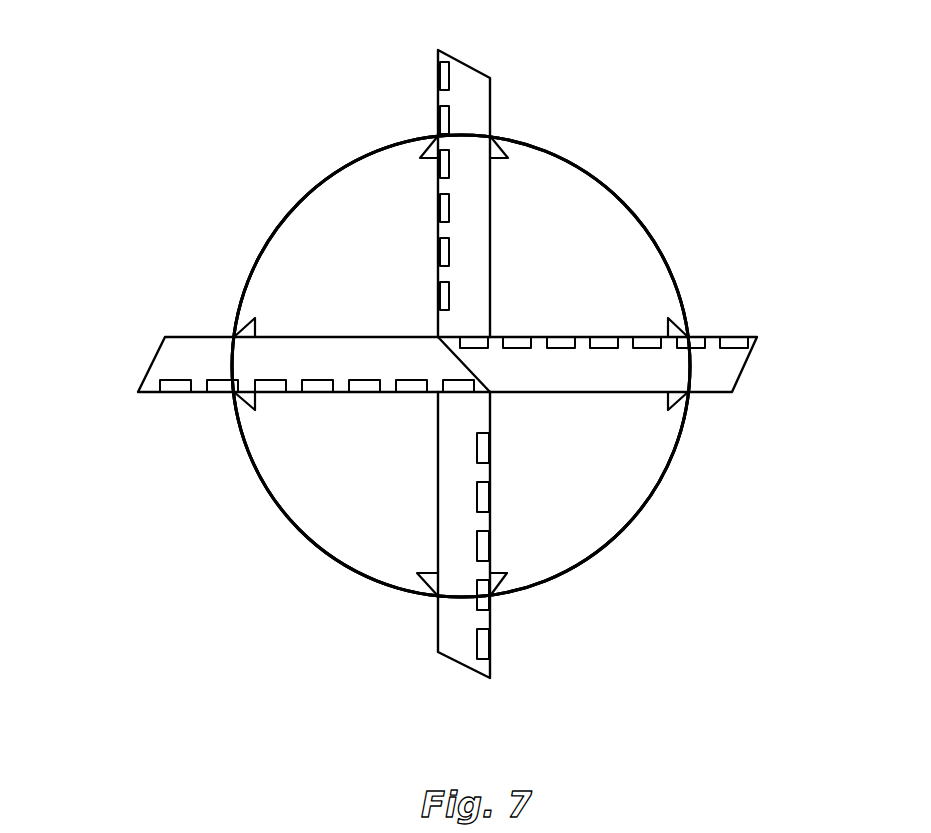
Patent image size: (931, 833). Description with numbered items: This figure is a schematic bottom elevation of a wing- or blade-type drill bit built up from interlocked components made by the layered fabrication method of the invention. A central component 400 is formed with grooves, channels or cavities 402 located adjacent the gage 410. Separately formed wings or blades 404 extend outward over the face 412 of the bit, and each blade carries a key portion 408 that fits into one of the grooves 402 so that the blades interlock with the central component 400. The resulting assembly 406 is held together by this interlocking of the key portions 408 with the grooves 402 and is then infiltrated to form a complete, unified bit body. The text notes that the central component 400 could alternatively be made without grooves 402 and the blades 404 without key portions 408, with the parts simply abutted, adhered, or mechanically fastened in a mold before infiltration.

The central component 400 is at (633, 204).
The grooves 402 is at (503, 148).
The wings or blades 404 is at (475, 90).
The assembly 406 is at (297, 139).
The key portions 408 is at (237, 336).
The gage 410 is at (677, 275).
The face 412 is at (580, 477).